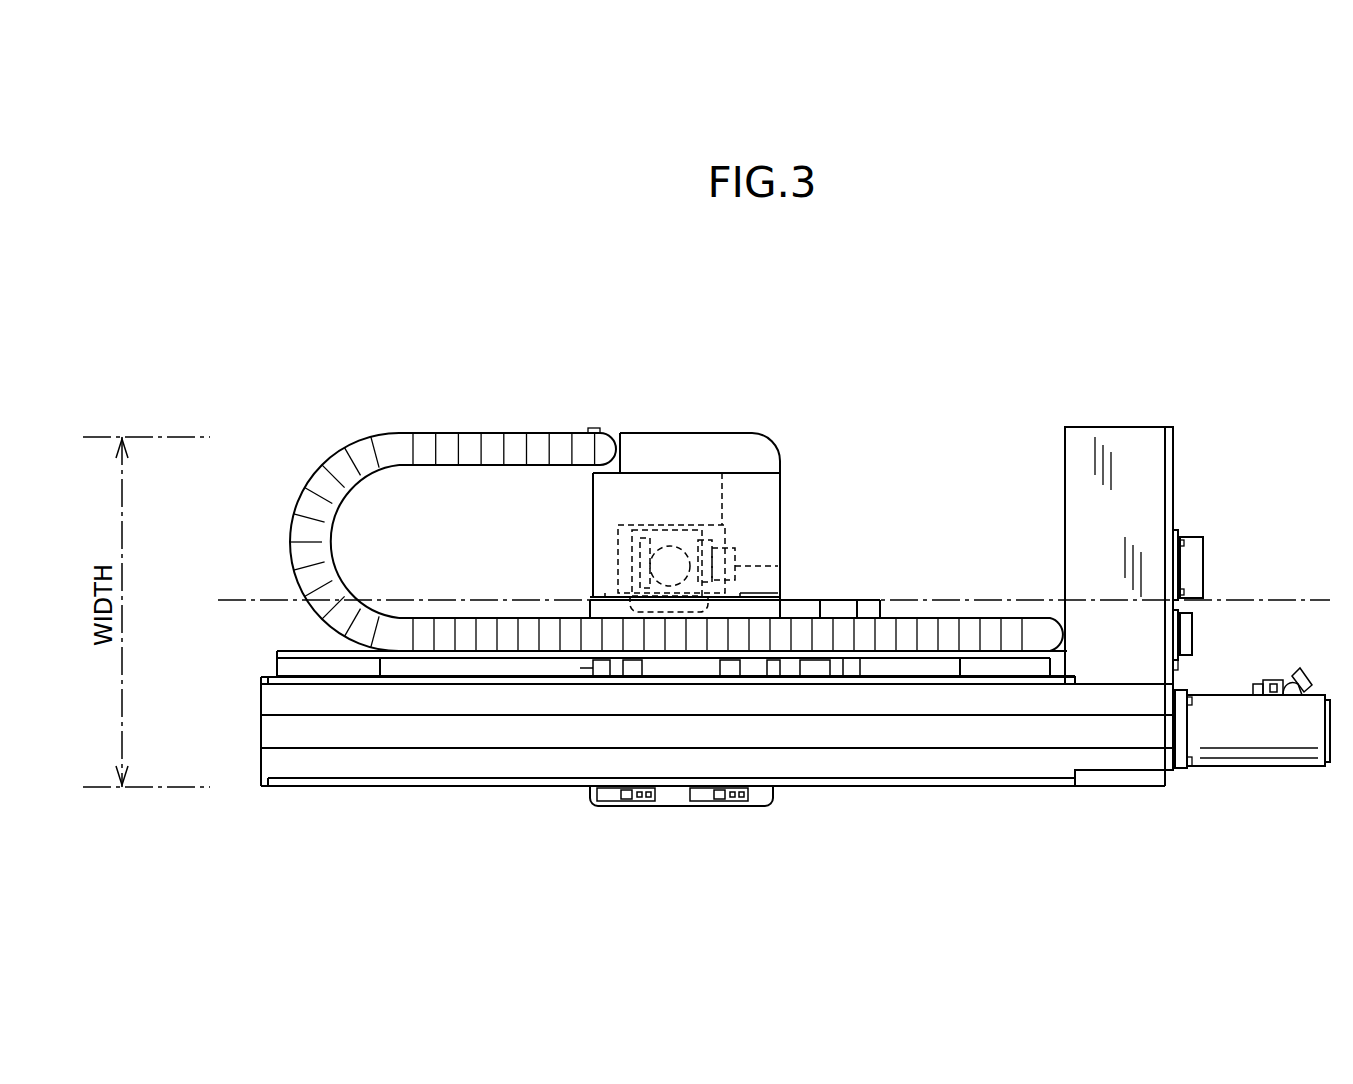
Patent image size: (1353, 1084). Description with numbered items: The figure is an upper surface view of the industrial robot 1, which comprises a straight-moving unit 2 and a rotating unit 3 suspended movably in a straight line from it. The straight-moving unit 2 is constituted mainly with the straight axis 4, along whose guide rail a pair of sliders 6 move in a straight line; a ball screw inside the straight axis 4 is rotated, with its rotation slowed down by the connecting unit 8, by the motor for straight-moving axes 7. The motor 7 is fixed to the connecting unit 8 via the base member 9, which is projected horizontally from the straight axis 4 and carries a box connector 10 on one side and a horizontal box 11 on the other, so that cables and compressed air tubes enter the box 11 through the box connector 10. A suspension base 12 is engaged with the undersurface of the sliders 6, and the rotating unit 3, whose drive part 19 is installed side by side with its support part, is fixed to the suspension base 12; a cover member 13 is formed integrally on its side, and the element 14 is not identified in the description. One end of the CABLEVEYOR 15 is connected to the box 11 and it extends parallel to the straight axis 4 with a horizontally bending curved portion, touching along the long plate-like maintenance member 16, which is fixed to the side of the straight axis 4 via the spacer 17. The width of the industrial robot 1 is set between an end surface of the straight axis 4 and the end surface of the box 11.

The industrial robot 1 is at (960, 406).
The straight-moving unit 2 is at (945, 568).
The rotating unit 3 is at (776, 418).
The straight axis 4 is at (287, 770).
The sliders 6 is at (590, 795).
The motor for straight-moving axes 7 is at (1257, 770).
The connecting unit 8 is at (1125, 778).
The base member 9 is at (1178, 473).
The box connector 10 is at (1205, 562).
The box 11 is at (1115, 432).
The suspension base 12 is at (673, 806).
The cover member 13 is at (679, 482).
The cover 14 is at (766, 456).
The CABLEVEYOR 15 is at (418, 435).
The maintenance member 16 is at (300, 645).
The spacer 17 is at (330, 663).
The drive part 19 is at (641, 525).